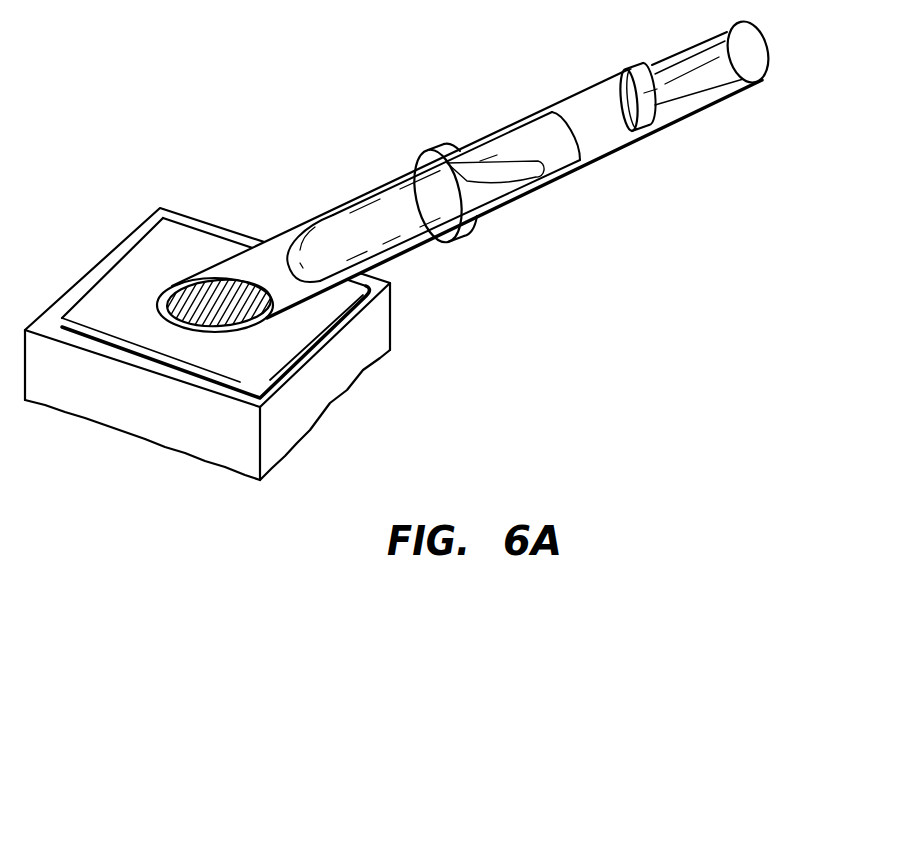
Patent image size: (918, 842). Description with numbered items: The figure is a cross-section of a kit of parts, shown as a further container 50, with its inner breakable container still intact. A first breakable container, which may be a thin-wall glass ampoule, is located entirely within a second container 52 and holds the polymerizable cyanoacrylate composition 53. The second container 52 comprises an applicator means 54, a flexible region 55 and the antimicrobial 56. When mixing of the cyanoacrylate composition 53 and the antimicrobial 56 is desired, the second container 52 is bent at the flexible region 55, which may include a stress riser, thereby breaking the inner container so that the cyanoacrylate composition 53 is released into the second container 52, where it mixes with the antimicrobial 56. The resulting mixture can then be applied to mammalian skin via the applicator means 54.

The container 50 is at (399, 240).
The second container 52 is at (465, 166).
The polymerizable cyanoacrylate composition 53 is at (515, 198).
The applicator means 54 is at (290, 435).
The flexible region 55 is at (463, 240).
The antimicrobial 56 is at (262, 311).